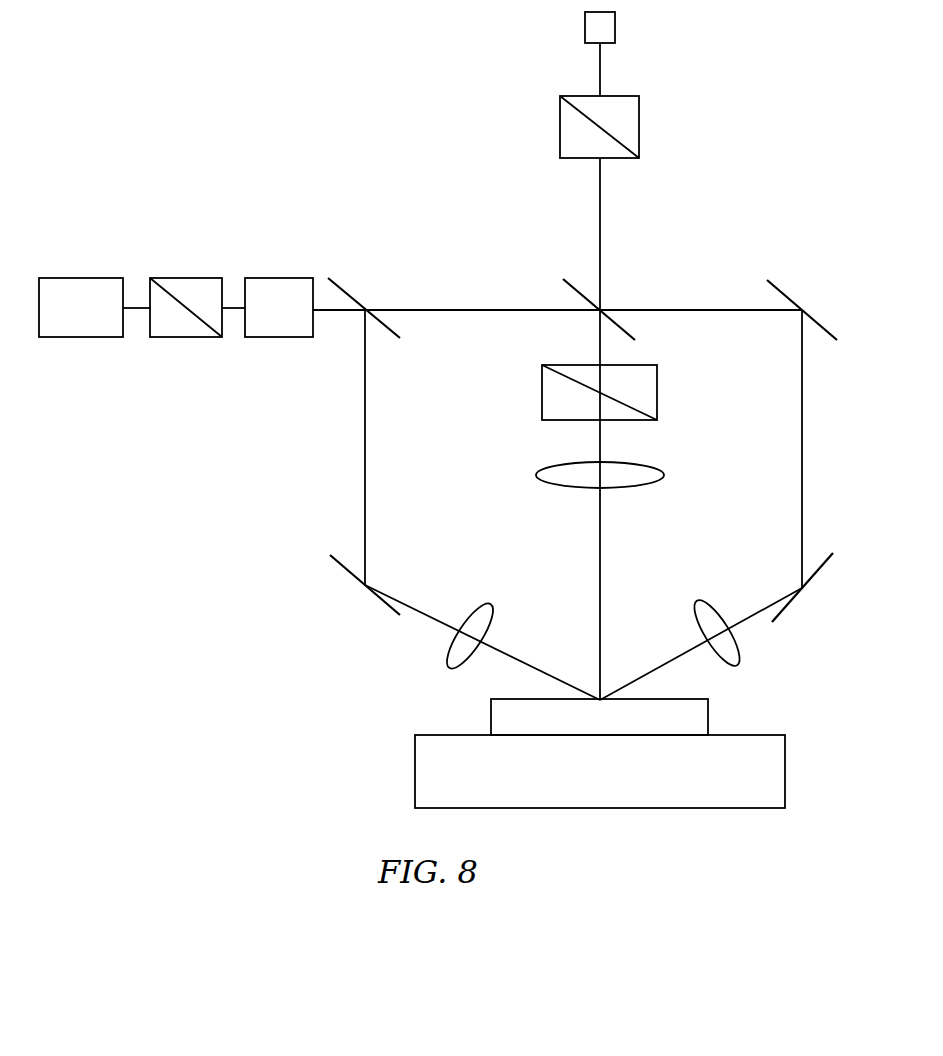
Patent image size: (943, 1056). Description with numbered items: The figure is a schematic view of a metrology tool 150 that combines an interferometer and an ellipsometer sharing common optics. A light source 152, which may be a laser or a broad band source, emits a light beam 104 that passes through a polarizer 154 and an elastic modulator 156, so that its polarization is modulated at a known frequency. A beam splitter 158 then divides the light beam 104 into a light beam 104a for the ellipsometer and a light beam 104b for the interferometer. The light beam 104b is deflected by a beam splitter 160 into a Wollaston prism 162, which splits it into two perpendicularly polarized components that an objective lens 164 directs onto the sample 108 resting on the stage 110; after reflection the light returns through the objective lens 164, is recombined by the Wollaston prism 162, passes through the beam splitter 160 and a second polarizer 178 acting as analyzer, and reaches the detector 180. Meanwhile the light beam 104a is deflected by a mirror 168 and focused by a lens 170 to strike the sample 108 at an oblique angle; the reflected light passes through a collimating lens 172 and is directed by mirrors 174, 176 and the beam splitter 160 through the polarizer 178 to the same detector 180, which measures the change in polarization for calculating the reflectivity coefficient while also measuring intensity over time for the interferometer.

The metrology tool 150 is at (370, 115).
The light source 152 is at (80, 278).
The polarizer 154 is at (187, 278).
The elastic modulator 156 is at (288, 278).
The light beam 104 is at (233, 311).
The light beam 104a is at (366, 422).
The light beam 104b is at (462, 309).
The beam splitter 158 is at (342, 283).
The beam splitter 160 is at (625, 327).
The Wollaston prism 162 is at (658, 390).
The objective lens 164 is at (662, 470).
The mirror 168 is at (386, 601).
The lens 170 is at (490, 604).
The collimating lens 172 is at (698, 603).
The mirror 174 is at (818, 569).
The mirror 176 is at (778, 285).
The second polarizer 178 is at (640, 127).
The detector 180 is at (615, 27).
The sample 108 is at (709, 716).
The stage 110 is at (786, 792).